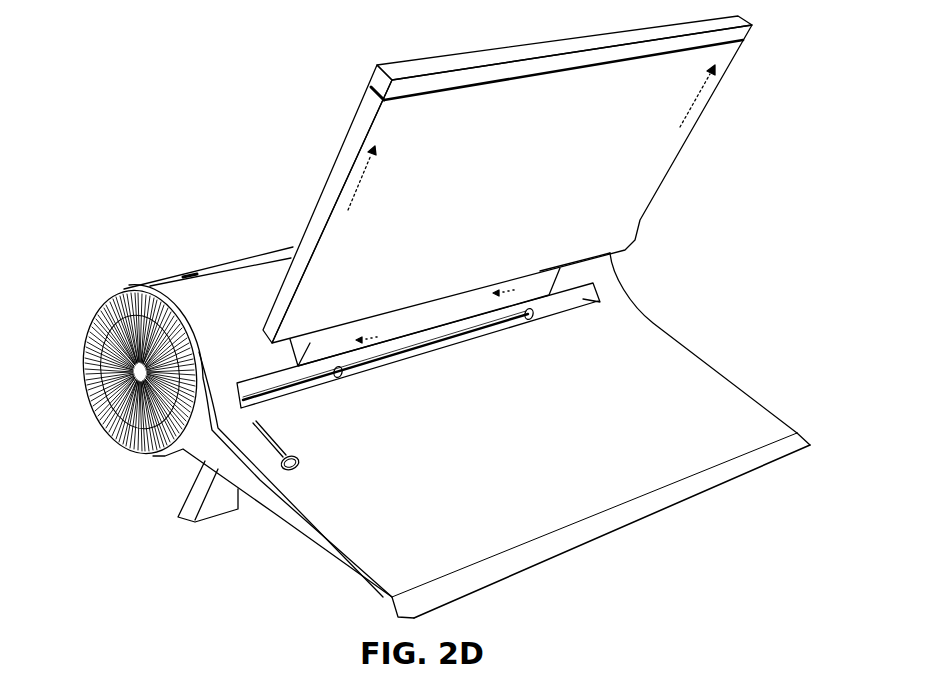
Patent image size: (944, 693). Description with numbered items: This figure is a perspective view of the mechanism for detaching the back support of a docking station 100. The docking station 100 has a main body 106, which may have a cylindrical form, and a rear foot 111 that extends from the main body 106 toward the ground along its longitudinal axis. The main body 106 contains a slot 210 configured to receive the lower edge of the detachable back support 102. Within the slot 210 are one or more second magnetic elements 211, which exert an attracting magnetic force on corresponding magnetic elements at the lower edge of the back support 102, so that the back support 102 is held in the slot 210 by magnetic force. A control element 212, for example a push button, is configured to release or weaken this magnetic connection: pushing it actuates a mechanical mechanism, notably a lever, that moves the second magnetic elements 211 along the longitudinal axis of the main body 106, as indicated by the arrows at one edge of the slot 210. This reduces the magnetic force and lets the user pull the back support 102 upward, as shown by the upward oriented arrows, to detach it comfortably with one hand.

The docking station 100 is at (510, 191).
The detachable back support 102 is at (335, 192).
The main body 106 is at (127, 451).
The rear foot 111 is at (643, 326).
The slot 210 is at (597, 293).
The second magnetic elements 211 is at (531, 320).
The control element 212 is at (290, 470).